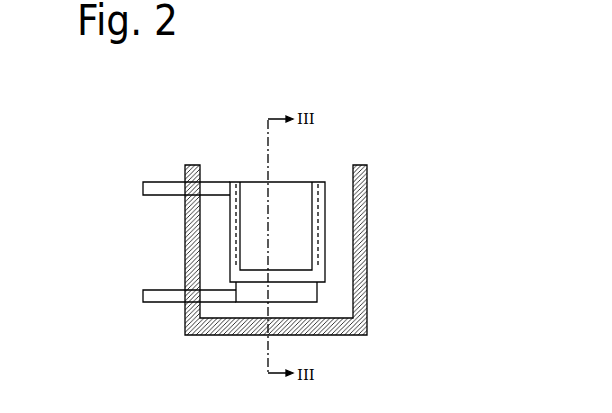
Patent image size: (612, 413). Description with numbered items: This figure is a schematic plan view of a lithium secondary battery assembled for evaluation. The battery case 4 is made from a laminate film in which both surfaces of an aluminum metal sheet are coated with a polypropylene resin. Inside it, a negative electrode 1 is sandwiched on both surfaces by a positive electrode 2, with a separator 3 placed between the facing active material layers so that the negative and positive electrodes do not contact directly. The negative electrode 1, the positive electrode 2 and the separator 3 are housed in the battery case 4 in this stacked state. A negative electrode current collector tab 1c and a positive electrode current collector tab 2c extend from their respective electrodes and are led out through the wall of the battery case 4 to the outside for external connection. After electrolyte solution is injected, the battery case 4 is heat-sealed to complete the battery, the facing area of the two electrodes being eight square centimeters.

The negative electrode 1 is at (293, 291).
The negative electrode current collector tab 1c is at (162, 297).
The positive electrode 2 is at (293, 197).
The positive electrode current collector tab 2c is at (153, 182).
The separator 3 is at (340, 230).
The battery case 4 is at (333, 182).